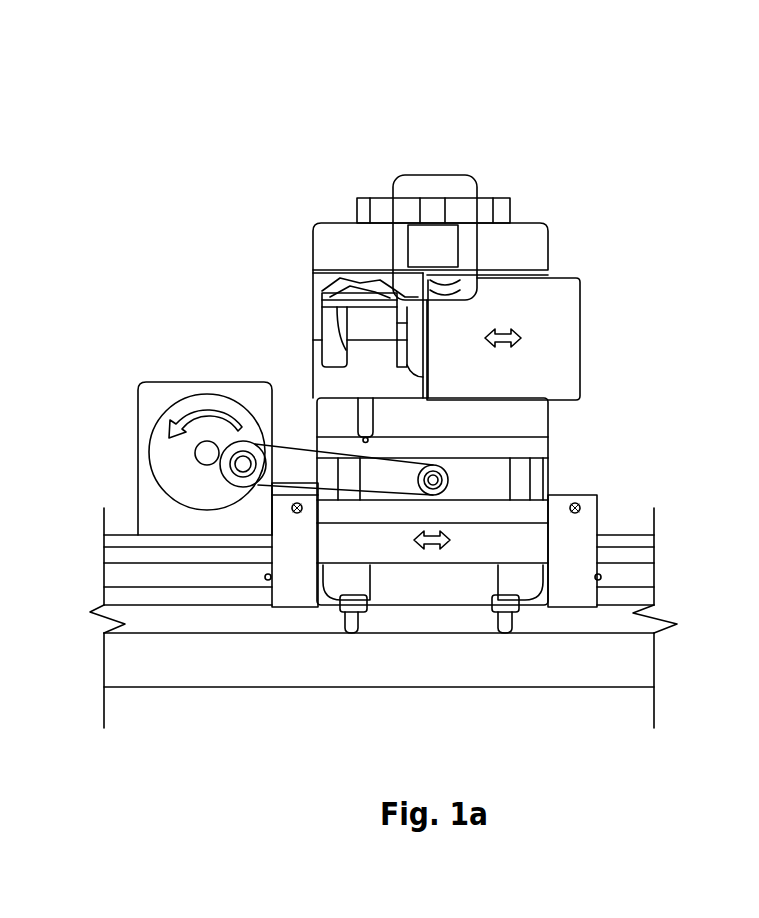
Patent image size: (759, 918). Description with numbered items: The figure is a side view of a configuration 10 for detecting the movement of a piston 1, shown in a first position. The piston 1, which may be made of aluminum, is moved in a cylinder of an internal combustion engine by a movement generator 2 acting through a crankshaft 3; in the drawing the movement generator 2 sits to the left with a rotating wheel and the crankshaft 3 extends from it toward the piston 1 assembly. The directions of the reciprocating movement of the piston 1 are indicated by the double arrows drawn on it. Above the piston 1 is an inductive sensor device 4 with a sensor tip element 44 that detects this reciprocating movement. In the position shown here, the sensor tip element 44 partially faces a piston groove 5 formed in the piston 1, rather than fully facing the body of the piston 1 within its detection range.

The configuration 10 is at (625, 56).
The piston 1 is at (560, 278).
The movement generator 2 is at (195, 382).
The crankshaft 3 is at (303, 457).
The inductive sensor device 4 is at (495, 188).
The sensor tip element 44 is at (418, 252).
The piston groove 5 is at (393, 300).